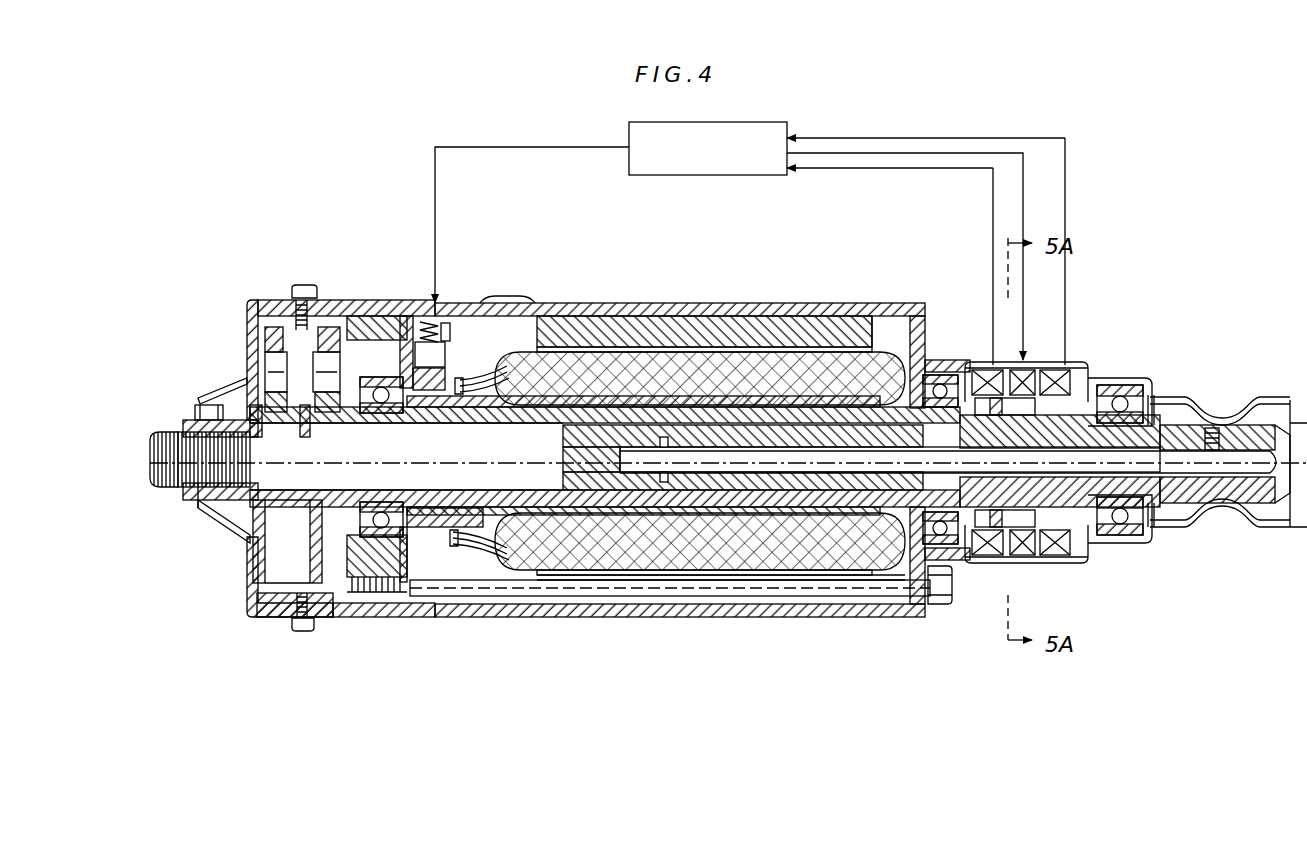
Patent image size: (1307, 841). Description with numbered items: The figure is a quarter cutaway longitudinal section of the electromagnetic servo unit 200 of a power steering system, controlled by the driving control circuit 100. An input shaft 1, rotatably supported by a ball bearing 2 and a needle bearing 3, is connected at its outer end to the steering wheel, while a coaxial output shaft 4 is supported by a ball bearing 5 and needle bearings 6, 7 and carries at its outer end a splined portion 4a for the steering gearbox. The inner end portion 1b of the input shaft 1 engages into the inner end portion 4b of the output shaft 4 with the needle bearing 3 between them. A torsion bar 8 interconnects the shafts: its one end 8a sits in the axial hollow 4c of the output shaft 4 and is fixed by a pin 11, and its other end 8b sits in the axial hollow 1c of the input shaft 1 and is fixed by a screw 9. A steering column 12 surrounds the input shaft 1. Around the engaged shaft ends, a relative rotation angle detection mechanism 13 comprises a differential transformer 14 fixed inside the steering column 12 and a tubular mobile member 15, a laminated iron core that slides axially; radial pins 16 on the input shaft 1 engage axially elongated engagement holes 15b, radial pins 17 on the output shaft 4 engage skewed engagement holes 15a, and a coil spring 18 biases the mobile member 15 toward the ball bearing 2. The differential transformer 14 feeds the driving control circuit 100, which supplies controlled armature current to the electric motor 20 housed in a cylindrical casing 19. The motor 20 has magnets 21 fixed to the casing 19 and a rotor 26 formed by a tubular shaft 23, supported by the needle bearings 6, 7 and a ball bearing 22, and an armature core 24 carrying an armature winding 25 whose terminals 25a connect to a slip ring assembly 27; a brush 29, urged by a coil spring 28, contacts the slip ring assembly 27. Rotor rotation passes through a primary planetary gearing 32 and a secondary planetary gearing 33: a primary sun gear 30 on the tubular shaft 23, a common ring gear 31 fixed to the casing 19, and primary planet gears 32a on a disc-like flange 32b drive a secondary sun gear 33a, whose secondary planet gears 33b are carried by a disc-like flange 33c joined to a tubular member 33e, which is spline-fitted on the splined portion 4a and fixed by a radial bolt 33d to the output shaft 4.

The input shaft 1 is at (1300, 425).
The axially inner end portion of input shaft 1b is at (950, 596).
The axial hollow of input shaft 1c is at (1152, 495).
The ball bearing 2 is at (1165, 398).
The needle bearing 3 is at (940, 375).
The output shaft 4 is at (545, 480).
The splined portion 4a is at (177, 437).
The axially inner end portion of output shaft 4b is at (935, 604).
The axial hollow of output shaft 4c is at (730, 470).
The ball bearing 5 is at (926, 362).
The needle bearing 6 is at (850, 570).
The needle bearing 7 is at (457, 490).
The torsion bar 8 is at (1075, 465).
The end of torsion bar 8a is at (613, 470).
The other end of torsion bar 8b is at (1213, 470).
The screw 9 is at (1213, 428).
The pin 11 is at (665, 470).
The steering column 12 is at (1125, 385).
The relative rotation angle detection mechanism 13 is at (1070, 362).
The differential transformer 14 is at (1000, 398).
The tubular mobile member 15 is at (985, 370).
The engagement holes 15a is at (1055, 560).
The engagement holes 15b is at (1045, 370).
The radial pins 16 is at (1030, 365).
The radial pins 17 is at (1025, 527).
The coil spring 18 is at (1100, 380).
The cylindrical casing 19 is at (606, 303).
The electric motor 20 is at (888, 335).
The magnets 21 is at (800, 350).
The ball bearing 22 is at (378, 377).
The tubular shaft 23 is at (535, 300).
The armature core 24 is at (700, 330).
The armature winding 25 is at (757, 355).
The terminals 25a is at (470, 380).
The rotor 26 is at (522, 395).
The slip ring assembly 27 is at (450, 342).
The coil spring 28 is at (428, 320).
The brush 29 is at (445, 323).
The primary sun gear 30 is at (337, 503).
The common ring gear 31 is at (355, 303).
The primary planetary gearing 32 is at (290, 345).
The primary planet gears 32a is at (300, 300).
The disc-like flange 32b is at (325, 613).
The secondary planetary gearing 33 is at (253, 352).
The secondary sun gear 33a is at (283, 500).
The secondary planet gears 33b is at (255, 335).
The disc-like flange 33c is at (250, 567).
The radial bolt 33d is at (208, 405).
The tubular member 33e is at (215, 498).
The driving control circuit 100 is at (790, 177).
The electromagnetic servo unit 200 is at (690, 252).